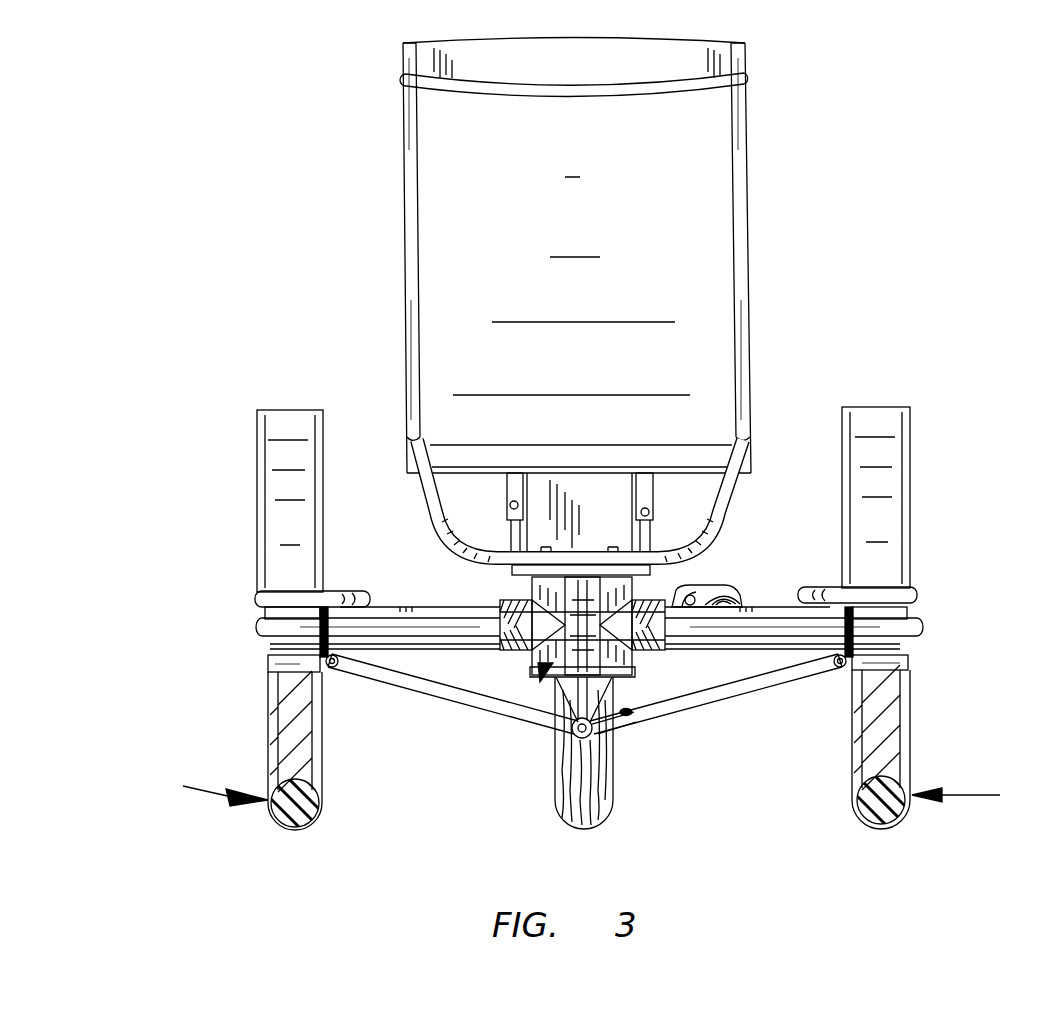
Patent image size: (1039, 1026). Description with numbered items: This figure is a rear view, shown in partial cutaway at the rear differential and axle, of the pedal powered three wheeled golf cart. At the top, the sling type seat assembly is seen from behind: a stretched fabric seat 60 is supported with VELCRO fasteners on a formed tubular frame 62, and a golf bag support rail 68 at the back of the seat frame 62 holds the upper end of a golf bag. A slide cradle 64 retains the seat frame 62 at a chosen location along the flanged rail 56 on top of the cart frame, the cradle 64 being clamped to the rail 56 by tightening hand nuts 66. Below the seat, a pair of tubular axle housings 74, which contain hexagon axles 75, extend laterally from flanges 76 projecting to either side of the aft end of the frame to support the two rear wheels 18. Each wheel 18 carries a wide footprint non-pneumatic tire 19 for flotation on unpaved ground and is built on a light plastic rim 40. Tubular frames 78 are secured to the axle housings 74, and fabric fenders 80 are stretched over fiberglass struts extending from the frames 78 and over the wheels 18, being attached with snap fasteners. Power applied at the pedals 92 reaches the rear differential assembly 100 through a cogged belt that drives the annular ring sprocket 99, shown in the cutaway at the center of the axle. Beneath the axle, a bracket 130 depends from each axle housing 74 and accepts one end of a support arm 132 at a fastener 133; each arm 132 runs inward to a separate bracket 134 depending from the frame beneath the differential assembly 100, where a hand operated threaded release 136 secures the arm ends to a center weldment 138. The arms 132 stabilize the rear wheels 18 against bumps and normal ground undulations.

The wheel 18 is at (612, 800).
The non-pneumatic tire 19 is at (322, 805).
The rim 40 is at (292, 752).
The flanged rail 56 is at (714, 560).
The fabric seat 60 is at (640, 263).
The tubular frame 62 is at (754, 328).
The slide cradle 64 is at (528, 562).
The hand nuts 66 is at (455, 566).
The golf bag support rail 68 is at (722, 84).
The tubular axle housing 74 is at (395, 613).
The hexagon axle 75 is at (400, 648).
The flange 76 is at (520, 612).
The tubular frame 78 is at (258, 597).
The fabric fender 80 is at (262, 414).
The pedal 92 is at (715, 582).
The annular ring sprocket 99 is at (595, 697).
The rear differential assembly 100 is at (548, 680).
The bracket 130 is at (330, 660).
The support arm 132 is at (450, 700).
The fastener 133 is at (335, 668).
The bracket 134 is at (630, 716).
The hand operated threaded release 136 is at (626, 718).
The center weldment 138 is at (575, 738).